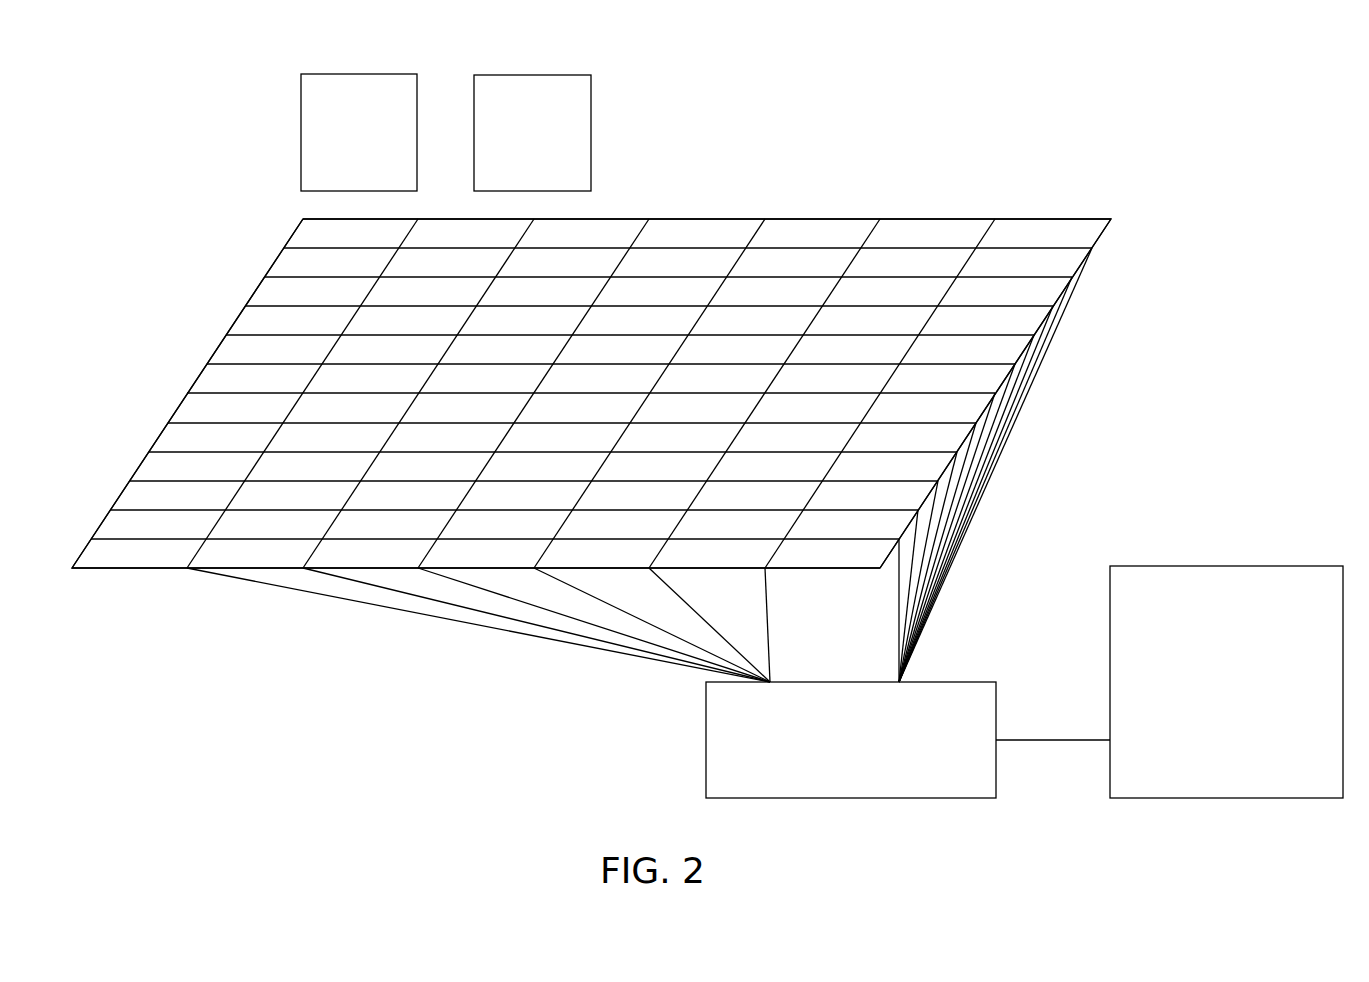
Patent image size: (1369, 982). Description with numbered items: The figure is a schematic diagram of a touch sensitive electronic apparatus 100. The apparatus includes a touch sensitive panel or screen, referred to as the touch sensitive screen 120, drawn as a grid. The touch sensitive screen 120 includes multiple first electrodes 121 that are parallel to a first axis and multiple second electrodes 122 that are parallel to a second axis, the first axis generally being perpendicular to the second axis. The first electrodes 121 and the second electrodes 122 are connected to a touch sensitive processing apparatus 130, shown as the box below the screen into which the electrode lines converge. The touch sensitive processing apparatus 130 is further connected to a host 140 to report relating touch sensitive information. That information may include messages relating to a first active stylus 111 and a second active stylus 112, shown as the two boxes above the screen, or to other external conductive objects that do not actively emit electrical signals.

The touch sensitive electronic apparatus 100 is at (186, 133).
The first active stylus 111 is at (377, 144).
The second active stylus 112 is at (551, 144).
The touch sensitive screen 120 is at (677, 218).
The first electrodes 121 is at (881, 220).
The second electrodes 122 is at (1053, 243).
The touch sensitive processing apparatus 130 is at (867, 722).
The host 140 is at (1245, 681).